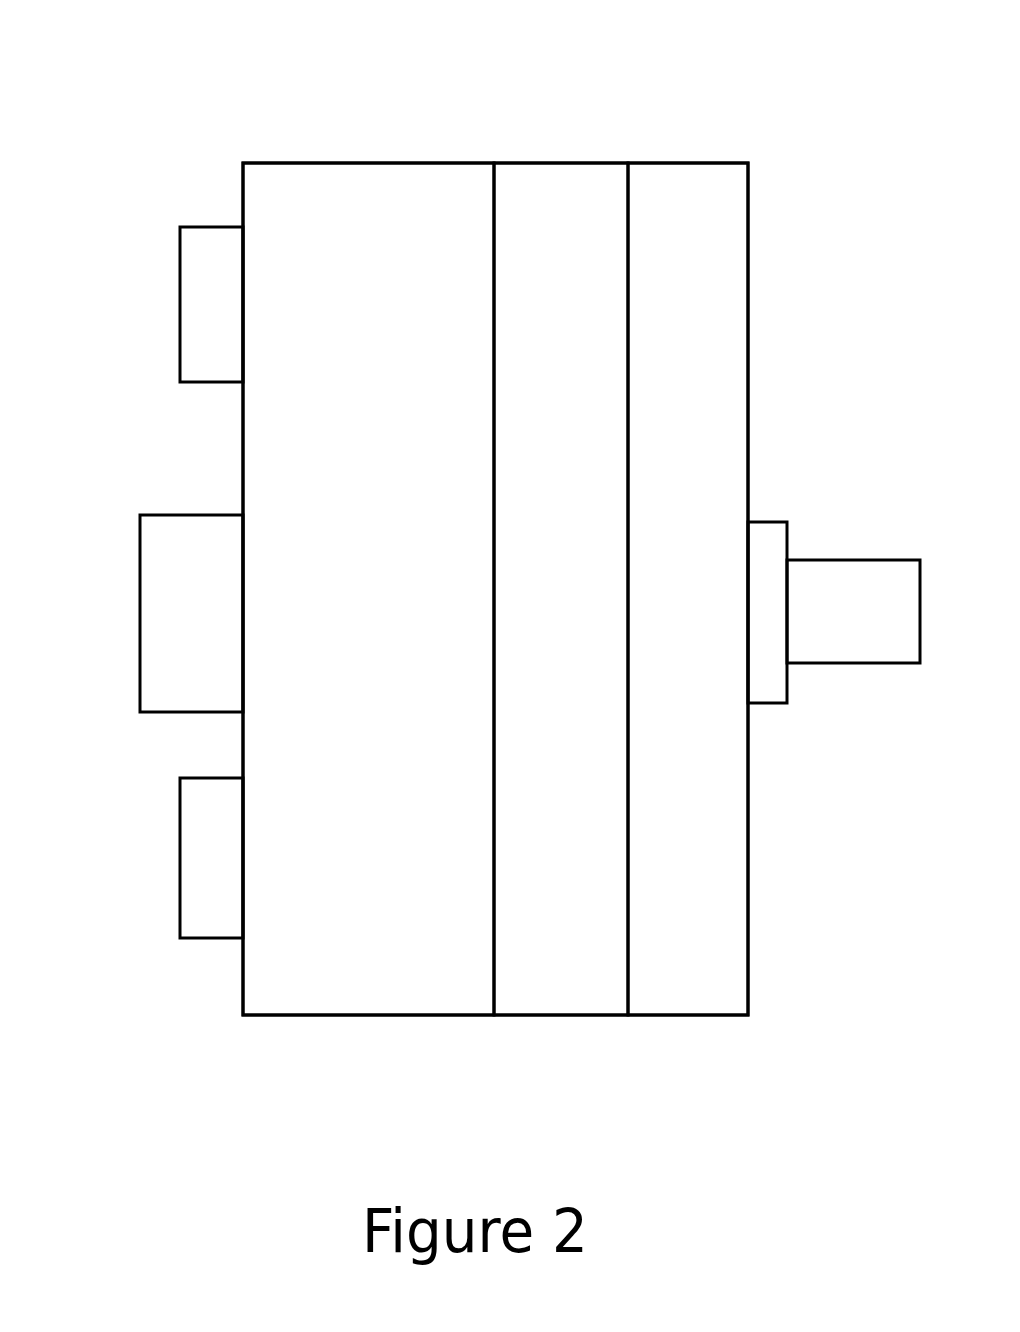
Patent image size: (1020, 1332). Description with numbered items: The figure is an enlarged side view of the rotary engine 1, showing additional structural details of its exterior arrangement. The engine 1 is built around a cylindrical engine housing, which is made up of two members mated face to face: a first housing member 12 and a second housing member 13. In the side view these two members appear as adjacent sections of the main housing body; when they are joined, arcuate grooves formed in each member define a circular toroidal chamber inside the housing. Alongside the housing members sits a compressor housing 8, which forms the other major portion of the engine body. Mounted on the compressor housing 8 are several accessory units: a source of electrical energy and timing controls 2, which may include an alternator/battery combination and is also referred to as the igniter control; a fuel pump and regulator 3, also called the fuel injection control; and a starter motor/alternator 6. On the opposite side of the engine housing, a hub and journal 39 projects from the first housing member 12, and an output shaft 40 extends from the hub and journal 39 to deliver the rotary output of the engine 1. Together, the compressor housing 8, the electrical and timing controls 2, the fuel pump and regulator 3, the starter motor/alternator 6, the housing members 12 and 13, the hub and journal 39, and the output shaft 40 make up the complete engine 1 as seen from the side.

The engine 1 is at (418, 135).
The compressor housing 8 is at (327, 223).
The second housing member 13 is at (552, 223).
The first housing member 12 is at (698, 225).
The fuel pump and regulator 3 is at (180, 281).
The starter motor/alternator 6 is at (140, 612).
The source of electrical energy and timing controls 2 is at (180, 887).
The hub and journal 39 is at (788, 525).
The output shaft 40 is at (863, 613).